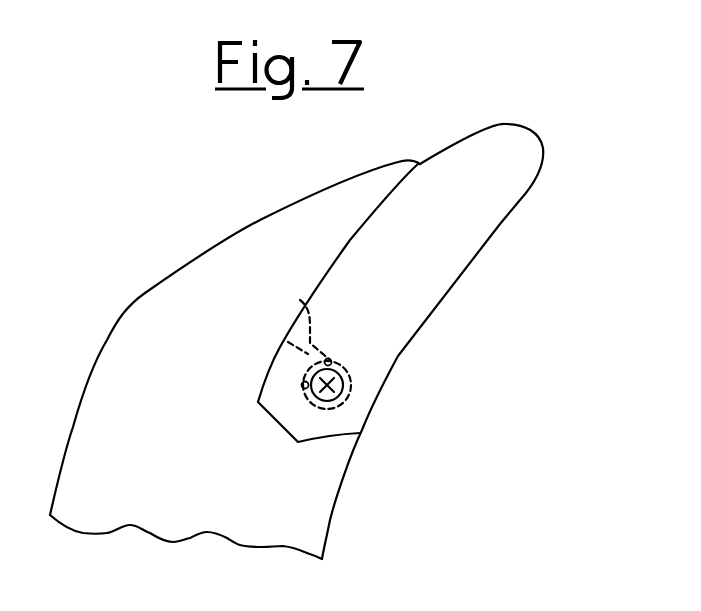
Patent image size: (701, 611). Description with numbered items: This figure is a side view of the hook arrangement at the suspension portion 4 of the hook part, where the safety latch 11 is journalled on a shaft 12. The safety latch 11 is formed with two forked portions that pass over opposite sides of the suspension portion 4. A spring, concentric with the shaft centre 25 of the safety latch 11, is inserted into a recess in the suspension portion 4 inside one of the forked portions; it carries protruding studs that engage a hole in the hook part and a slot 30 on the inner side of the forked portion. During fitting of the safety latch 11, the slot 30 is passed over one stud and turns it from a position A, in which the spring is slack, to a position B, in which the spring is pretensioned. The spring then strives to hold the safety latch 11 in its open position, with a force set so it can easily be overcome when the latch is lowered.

The suspension portion 4 is at (157, 308).
The safety latch 11 is at (465, 267).
The slot 30 is at (300, 300).
The shaft 12 is at (343, 385).
The shaft centre 25 is at (331, 401).
The position B is at (331, 358).
The position A is at (302, 388).